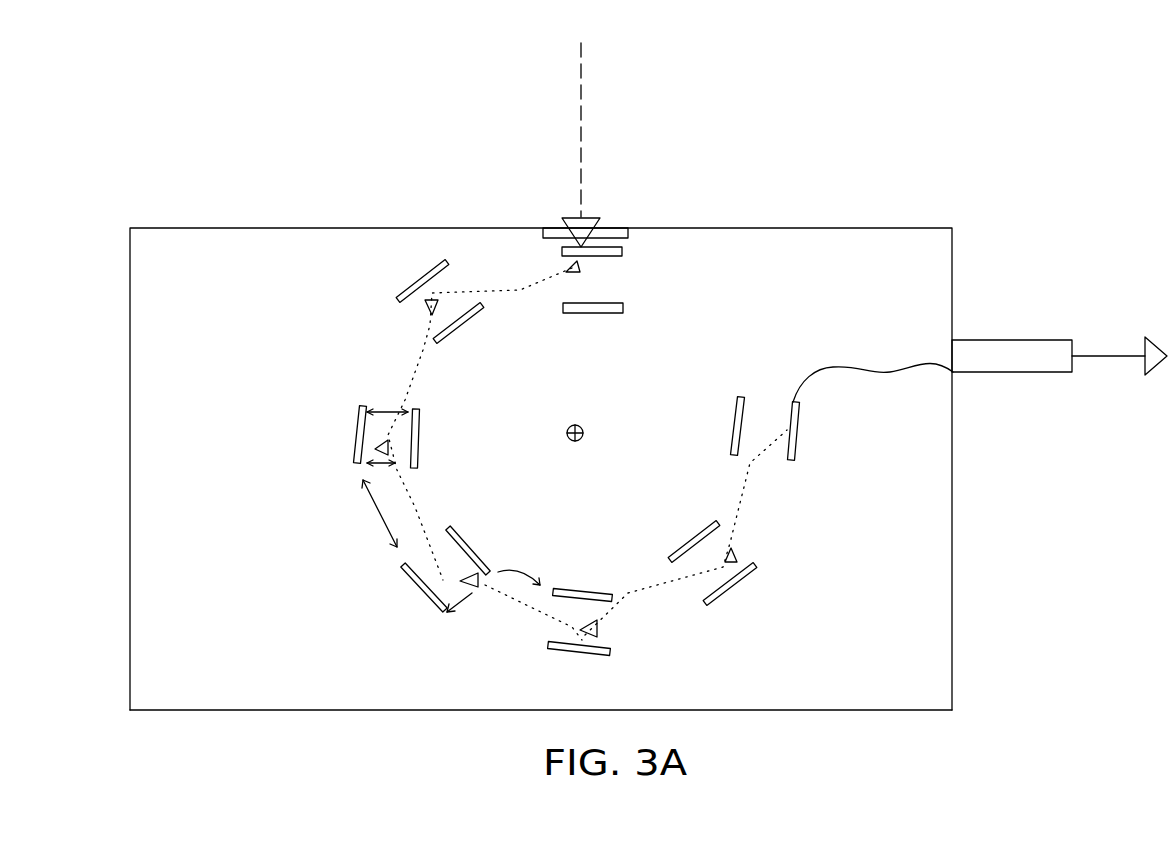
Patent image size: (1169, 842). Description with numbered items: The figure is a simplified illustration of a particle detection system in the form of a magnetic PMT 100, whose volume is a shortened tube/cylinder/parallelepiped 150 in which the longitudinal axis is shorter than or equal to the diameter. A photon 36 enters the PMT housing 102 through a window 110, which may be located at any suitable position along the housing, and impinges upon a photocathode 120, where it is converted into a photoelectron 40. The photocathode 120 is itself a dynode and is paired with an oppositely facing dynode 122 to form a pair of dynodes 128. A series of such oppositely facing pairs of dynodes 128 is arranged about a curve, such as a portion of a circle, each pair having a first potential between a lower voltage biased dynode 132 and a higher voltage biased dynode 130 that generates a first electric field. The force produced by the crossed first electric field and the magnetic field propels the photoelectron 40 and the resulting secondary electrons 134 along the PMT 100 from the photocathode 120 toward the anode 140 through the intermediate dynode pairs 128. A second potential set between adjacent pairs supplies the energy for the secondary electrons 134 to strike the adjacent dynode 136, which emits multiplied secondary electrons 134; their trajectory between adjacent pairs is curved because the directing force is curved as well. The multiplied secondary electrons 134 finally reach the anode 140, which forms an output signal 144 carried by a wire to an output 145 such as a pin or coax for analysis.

The PMT 100 is at (218, 260).
The PMT housing 102 is at (850, 230).
The shortened tube/cylinder/parallelepiped 150 is at (242, 700).
The photon 36 is at (582, 153).
The photoelectron 40 is at (523, 285).
The window 110 is at (557, 227).
The photocathode 120 is at (623, 256).
The dynode 122 is at (623, 307).
The pair of dynodes 128 is at (434, 341).
The higher voltage biased dynode 130 is at (458, 323).
The lower voltage biased dynode 132 is at (423, 278).
The secondary electrons 134 is at (643, 583).
The adjacent dynode 136 is at (362, 405).
The anode 140 is at (798, 402).
The output signal 144 is at (1108, 356).
The output 145 is at (1073, 340).